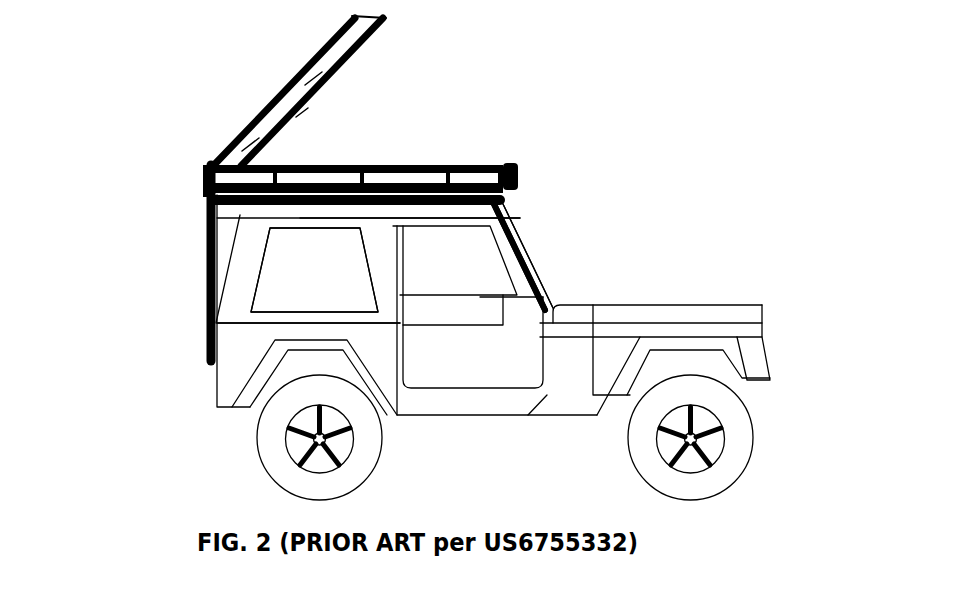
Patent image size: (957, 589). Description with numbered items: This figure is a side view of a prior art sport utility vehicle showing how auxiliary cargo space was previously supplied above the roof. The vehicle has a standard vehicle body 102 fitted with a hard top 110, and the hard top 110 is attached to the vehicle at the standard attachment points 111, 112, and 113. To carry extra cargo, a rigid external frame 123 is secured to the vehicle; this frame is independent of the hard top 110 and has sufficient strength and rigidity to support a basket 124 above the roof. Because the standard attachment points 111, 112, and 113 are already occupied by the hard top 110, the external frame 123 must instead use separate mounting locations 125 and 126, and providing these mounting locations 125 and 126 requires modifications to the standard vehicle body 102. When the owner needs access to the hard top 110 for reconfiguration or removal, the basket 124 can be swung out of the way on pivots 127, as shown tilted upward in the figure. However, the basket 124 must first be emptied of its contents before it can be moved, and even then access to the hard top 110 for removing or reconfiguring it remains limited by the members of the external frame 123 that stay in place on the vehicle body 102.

The vehicle body 102 is at (722, 323).
The hard top 110 is at (275, 273).
The standard attachment point 111 is at (496, 217).
The standard attachment point 112 is at (331, 328).
The standard attachment point 113 is at (382, 218).
The external frame 123 is at (530, 258).
The basket 124 is at (312, 166).
The mounting location 125 is at (550, 302).
The mounting location 126 is at (205, 362).
The pivots 127 is at (212, 192).